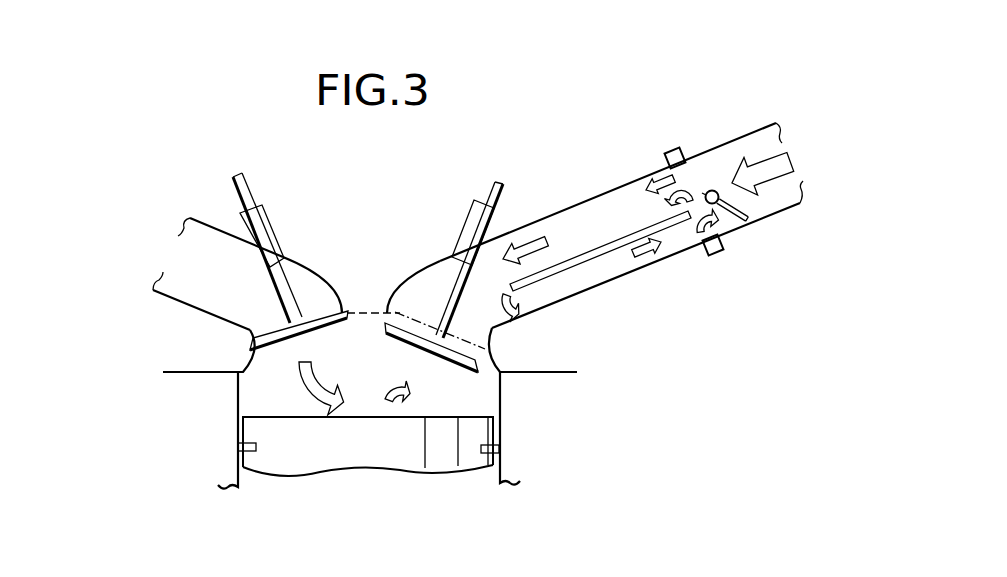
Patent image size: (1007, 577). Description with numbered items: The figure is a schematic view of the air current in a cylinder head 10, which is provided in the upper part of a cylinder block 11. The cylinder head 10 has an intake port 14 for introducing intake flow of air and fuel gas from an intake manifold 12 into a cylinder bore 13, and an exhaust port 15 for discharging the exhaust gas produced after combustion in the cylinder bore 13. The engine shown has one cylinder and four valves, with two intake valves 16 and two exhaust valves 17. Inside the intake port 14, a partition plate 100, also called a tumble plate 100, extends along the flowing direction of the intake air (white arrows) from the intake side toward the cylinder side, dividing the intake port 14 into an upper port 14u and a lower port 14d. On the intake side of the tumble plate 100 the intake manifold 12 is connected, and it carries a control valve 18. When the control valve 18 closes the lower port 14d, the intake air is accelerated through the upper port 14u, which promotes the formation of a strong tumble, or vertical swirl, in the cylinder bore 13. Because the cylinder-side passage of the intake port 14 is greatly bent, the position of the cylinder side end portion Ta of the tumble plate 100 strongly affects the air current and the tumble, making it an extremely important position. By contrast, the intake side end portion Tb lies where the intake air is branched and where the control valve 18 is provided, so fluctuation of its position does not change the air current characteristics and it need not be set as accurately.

The cylinder head 10 is at (172, 339).
The cylinder block 11 is at (182, 422).
The intake manifold 12 is at (780, 208).
The cylinder bore 13 is at (372, 368).
The intake port 14 is at (558, 196).
The upper port 14u is at (617, 207).
The lower port 14d is at (680, 238).
The exhaust port 15 is at (164, 252).
The intake valve 16 is at (382, 313).
The exhaust valve 17 is at (320, 307).
The control valve 18 is at (725, 222).
The partition plate (tumble plate) 100 is at (600, 257).
The cylinder side end portion Ta is at (497, 280).
The intake side end portion Tb is at (690, 203).